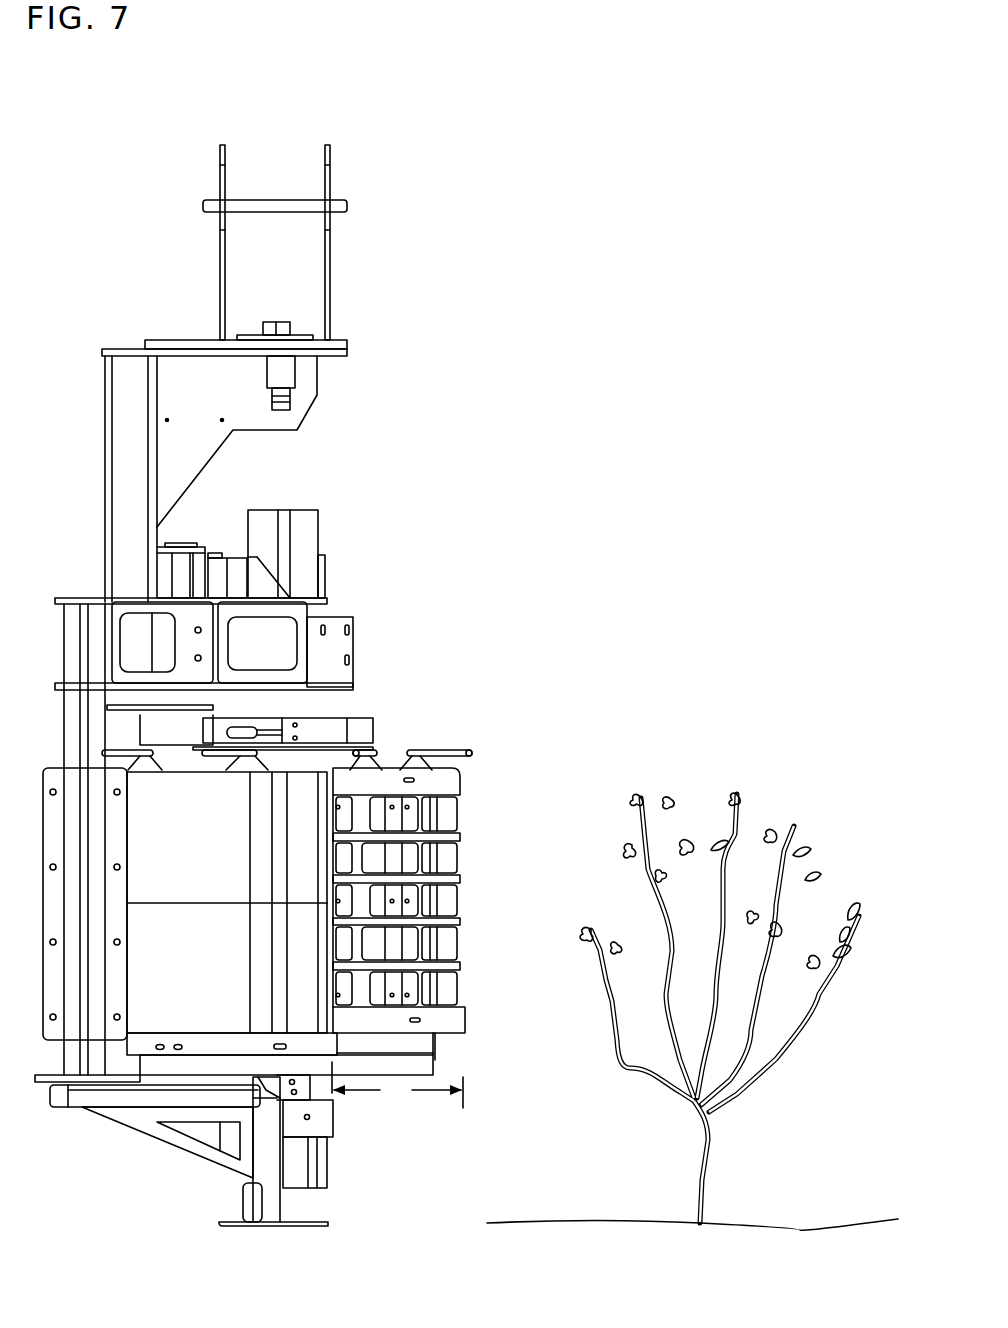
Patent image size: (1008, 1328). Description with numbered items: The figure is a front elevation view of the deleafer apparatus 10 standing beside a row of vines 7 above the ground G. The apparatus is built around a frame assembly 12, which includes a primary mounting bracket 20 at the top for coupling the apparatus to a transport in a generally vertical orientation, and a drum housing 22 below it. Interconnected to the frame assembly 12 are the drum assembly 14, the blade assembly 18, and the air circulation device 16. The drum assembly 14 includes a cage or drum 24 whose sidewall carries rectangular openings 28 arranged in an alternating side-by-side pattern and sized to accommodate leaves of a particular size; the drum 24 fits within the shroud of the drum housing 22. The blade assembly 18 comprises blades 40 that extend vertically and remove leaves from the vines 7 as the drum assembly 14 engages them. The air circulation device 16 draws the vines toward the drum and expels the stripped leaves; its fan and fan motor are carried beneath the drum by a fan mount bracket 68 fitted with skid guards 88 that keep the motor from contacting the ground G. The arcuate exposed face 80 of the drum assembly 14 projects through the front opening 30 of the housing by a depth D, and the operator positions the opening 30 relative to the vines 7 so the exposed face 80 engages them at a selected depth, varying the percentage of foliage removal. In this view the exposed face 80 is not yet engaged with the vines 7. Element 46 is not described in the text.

The vines 7 is at (769, 823).
The deleafer apparatus 10 is at (557, 407).
The frame assembly 12 is at (342, 400).
The drum assembly 14 is at (512, 1051).
The air circulation device 16 is at (335, 1145).
The blade assembly 18 is at (408, 813).
The primary mounting bracket 20 is at (307, 388).
The drum housing 22 is at (58, 775).
The drum 24 is at (452, 792).
The openings 28 is at (447, 905).
The front opening 30 is at (334, 856).
The blades 40 is at (430, 822).
The motor 46 is at (293, 537).
The fan mount bracket 68 is at (173, 1140).
The exposed face 80 is at (460, 967).
The skid guards 88 is at (302, 1220).
The depth D is at (397, 1085).
The ground G is at (566, 1220).